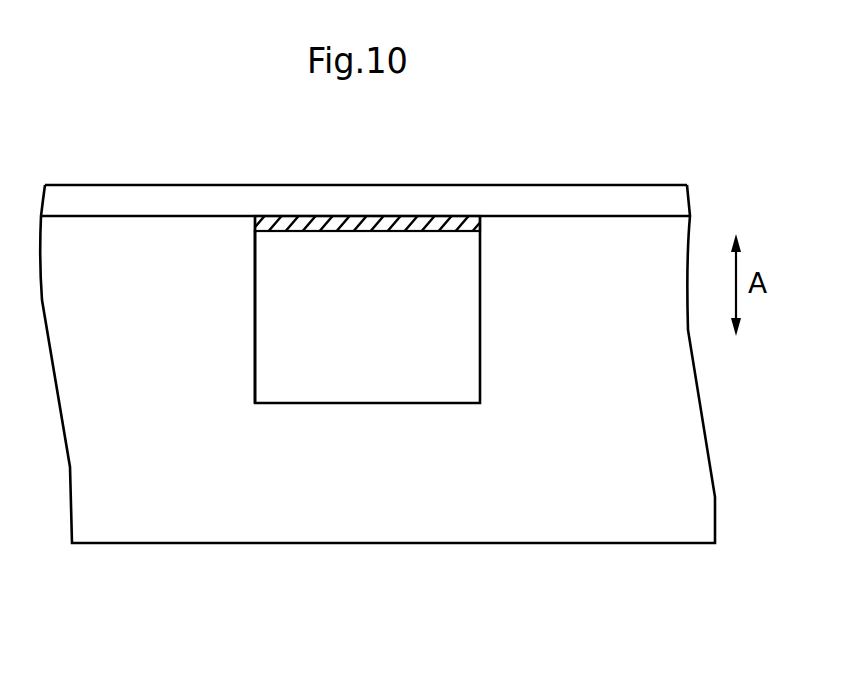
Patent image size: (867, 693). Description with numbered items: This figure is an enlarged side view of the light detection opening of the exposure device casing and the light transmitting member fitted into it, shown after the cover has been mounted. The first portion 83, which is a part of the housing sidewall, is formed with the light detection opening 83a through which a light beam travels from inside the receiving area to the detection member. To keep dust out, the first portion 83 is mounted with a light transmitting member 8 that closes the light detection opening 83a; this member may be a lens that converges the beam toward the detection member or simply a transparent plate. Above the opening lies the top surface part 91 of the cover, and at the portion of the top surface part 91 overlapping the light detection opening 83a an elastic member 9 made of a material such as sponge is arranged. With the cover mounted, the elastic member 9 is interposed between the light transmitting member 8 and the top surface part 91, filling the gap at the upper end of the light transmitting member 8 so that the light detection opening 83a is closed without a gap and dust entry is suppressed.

The light transmitting member 8 is at (440, 375).
The elastic member 9 is at (366, 216).
The first portion 83 is at (614, 530).
The light detection opening 83a is at (255, 372).
The top surface part 91 is at (513, 198).